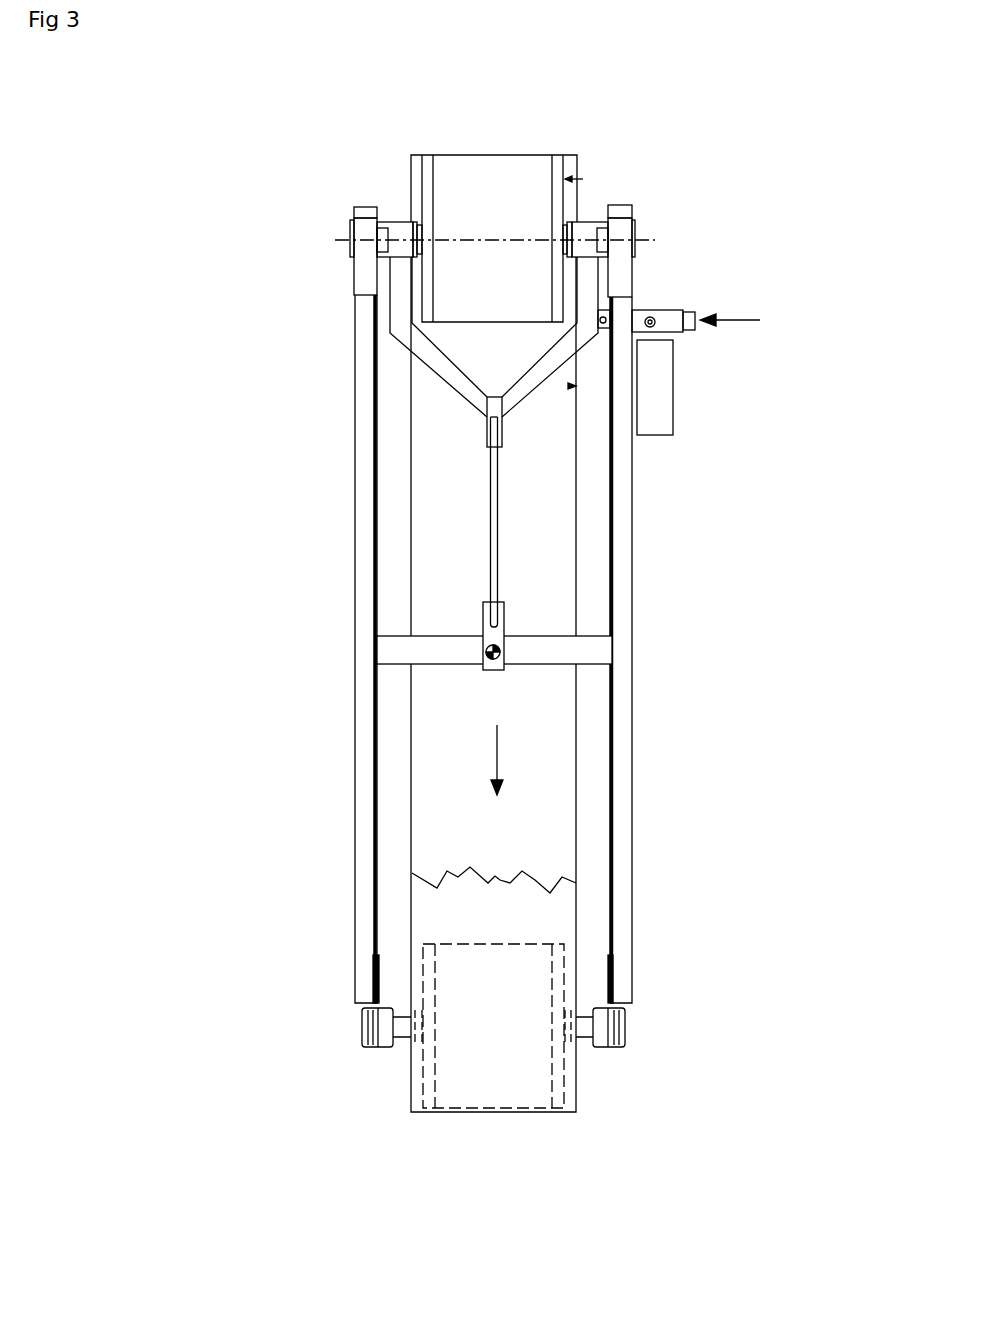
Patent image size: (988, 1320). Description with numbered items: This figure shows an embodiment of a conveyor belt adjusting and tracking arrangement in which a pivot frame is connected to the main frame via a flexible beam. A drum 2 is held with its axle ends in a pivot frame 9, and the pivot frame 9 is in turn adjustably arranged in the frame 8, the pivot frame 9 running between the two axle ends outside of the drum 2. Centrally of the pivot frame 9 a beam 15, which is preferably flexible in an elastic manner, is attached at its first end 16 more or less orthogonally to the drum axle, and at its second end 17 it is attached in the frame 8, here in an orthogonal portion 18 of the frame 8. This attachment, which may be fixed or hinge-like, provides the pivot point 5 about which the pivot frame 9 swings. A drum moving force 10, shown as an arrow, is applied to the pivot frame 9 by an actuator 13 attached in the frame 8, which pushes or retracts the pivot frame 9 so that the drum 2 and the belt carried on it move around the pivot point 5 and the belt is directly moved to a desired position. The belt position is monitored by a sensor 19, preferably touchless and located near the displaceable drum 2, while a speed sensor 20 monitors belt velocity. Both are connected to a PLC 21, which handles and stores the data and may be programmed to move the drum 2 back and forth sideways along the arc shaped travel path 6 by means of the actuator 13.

The drum 2 is at (455, 200).
The speed sensor 20 is at (582, 179).
The arc shaped travel path 6 is at (597, 235).
The actuator 13 is at (667, 307).
The drum moving force 10 is at (737, 317).
The PLC 21 is at (678, 407).
The pivot frame 9 is at (397, 308).
The sensor 19 is at (400, 384).
The first end 16 is at (487, 447).
The beam 15 is at (487, 513).
The second end 17 is at (487, 597).
The pivot point 5 is at (503, 647).
The orthogonal portion 18 is at (593, 657).
The frame 8 is at (618, 758).